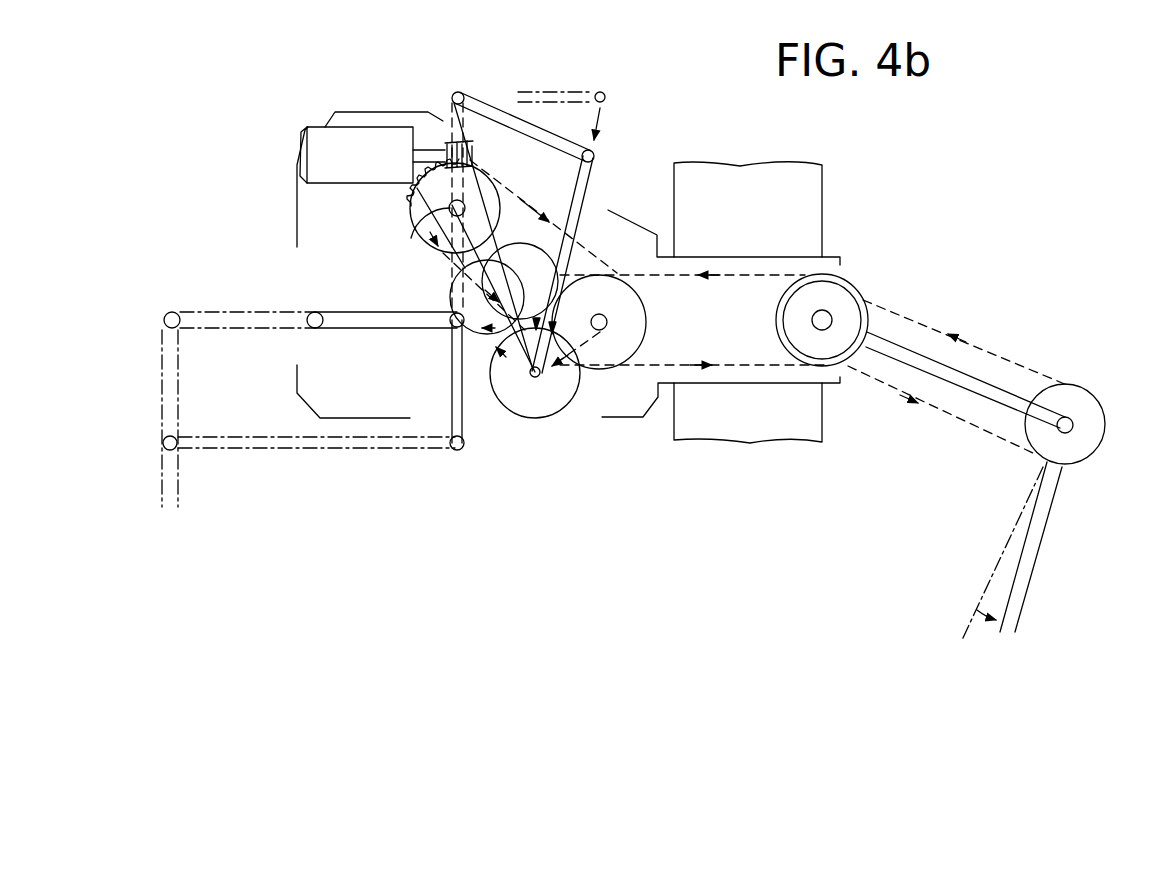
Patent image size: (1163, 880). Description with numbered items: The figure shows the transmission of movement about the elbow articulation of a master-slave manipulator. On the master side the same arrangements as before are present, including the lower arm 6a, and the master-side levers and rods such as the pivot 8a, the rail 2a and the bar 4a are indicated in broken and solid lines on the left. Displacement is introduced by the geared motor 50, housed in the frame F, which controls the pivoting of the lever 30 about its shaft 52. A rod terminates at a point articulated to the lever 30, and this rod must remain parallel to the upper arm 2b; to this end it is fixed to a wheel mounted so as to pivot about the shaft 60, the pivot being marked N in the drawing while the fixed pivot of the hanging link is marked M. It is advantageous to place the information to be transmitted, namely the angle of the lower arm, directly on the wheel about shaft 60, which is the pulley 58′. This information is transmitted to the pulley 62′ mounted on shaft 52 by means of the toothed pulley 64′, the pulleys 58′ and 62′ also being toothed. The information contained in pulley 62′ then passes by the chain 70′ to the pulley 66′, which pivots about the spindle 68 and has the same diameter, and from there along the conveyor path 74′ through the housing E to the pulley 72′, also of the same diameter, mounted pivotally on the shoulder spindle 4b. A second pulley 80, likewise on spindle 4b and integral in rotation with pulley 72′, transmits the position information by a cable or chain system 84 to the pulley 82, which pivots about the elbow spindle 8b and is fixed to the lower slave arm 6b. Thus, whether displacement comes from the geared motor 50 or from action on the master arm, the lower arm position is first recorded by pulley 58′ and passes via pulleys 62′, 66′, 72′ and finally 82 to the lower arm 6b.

The geared motor 50 is at (312, 143).
The frame housing F is at (353, 112).
The pivot axis M is at (458, 91).
The shaft 60 is at (541, 377).
The chain 70′ is at (538, 210).
The pulley 62′ is at (410, 198).
The shaft 52 is at (418, 232).
The lever 30 is at (448, 252).
The toothed pulley 64′ is at (450, 298).
The pulley 58′ is at (500, 417).
The pivot axis N is at (538, 378).
The pulley 66′ is at (632, 338).
The spindle 68 is at (602, 313).
The conveyor path 74′ is at (747, 273).
The conveyor housing E is at (713, 433).
The pulley 72′ is at (848, 288).
The second pulley 80 is at (866, 314).
The shoulder spindle 4b is at (829, 314).
The cable or chain system 84 is at (998, 357).
The upper arm 2b is at (958, 385).
The elbow spindle 8b is at (1068, 419).
The pulley 82 is at (1106, 435).
The lower slave arm 6b is at (1040, 525).
The pivot 8a is at (166, 315).
The rail 2a is at (247, 312).
The bar 4a is at (383, 350).
The lower arm 6a is at (178, 480).